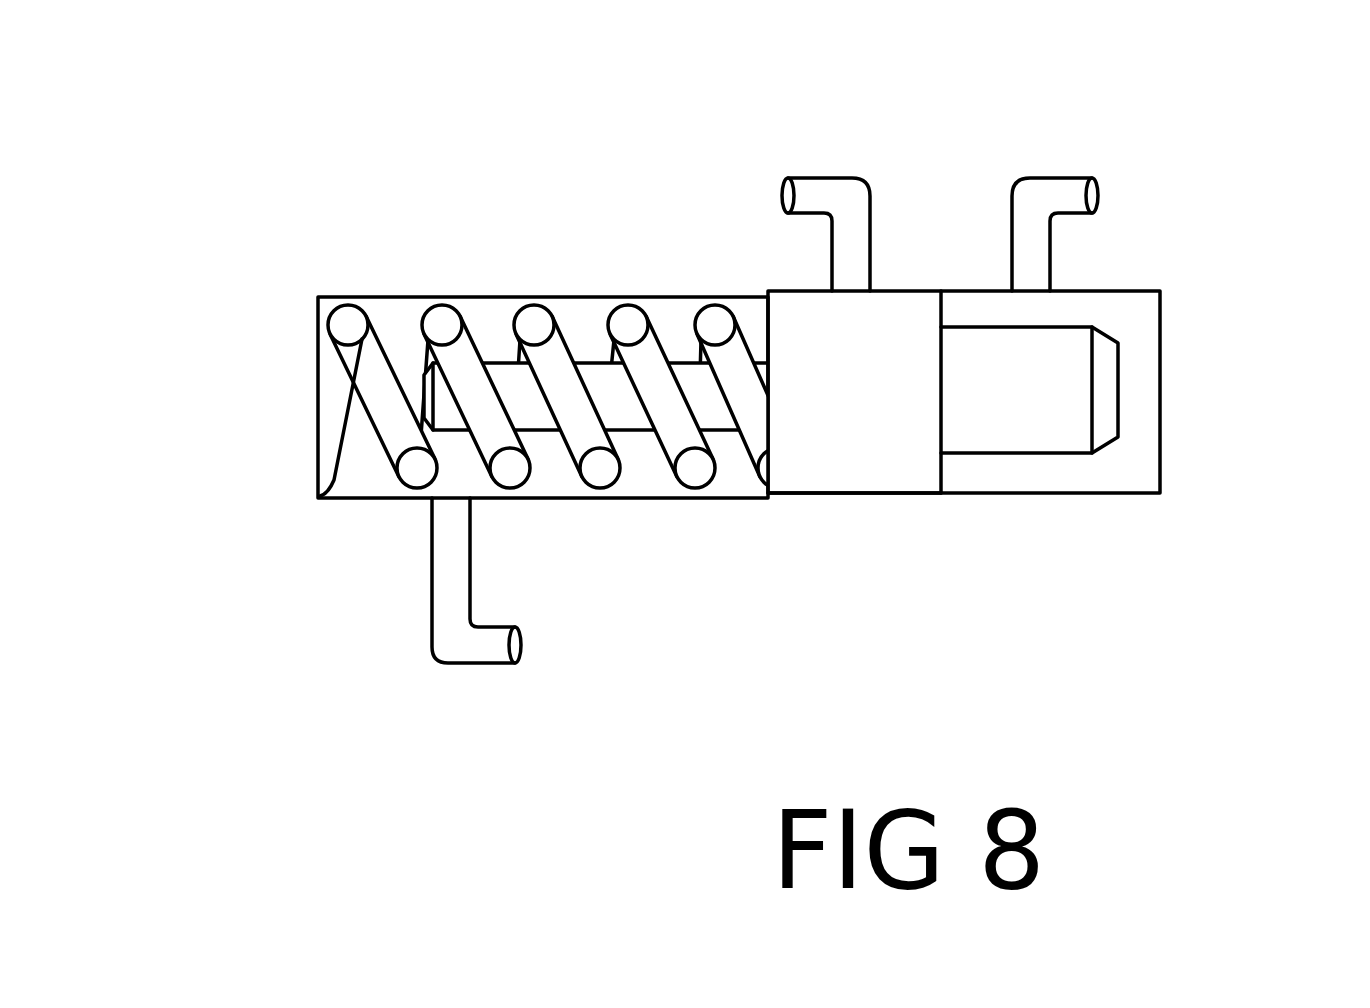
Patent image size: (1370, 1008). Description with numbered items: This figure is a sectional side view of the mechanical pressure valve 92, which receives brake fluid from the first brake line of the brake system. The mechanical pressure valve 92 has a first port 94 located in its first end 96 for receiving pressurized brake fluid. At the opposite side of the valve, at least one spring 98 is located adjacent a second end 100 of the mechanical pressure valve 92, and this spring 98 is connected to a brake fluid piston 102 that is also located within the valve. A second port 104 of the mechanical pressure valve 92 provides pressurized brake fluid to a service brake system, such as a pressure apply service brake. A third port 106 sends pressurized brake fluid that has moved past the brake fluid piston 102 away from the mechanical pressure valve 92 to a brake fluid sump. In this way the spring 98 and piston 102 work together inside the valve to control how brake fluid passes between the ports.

The mechanical pressure valve 92 is at (712, 349).
The first port 94 is at (1032, 286).
The first end 96 is at (1198, 390).
The spring 98 is at (594, 468).
The second end 100 is at (262, 402).
The brake fluid piston 102 is at (830, 465).
The second port 104 is at (848, 289).
The third port 106 is at (452, 498).